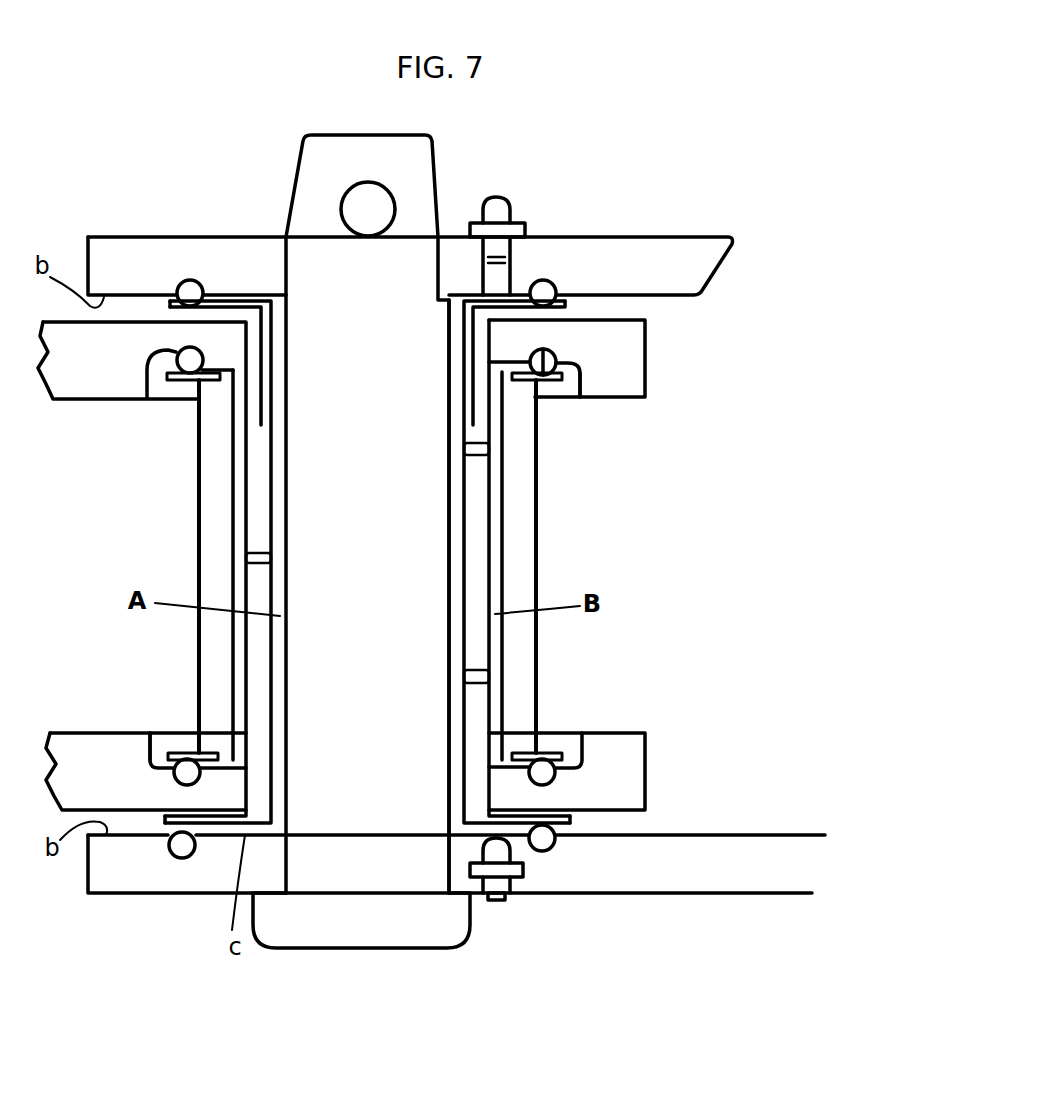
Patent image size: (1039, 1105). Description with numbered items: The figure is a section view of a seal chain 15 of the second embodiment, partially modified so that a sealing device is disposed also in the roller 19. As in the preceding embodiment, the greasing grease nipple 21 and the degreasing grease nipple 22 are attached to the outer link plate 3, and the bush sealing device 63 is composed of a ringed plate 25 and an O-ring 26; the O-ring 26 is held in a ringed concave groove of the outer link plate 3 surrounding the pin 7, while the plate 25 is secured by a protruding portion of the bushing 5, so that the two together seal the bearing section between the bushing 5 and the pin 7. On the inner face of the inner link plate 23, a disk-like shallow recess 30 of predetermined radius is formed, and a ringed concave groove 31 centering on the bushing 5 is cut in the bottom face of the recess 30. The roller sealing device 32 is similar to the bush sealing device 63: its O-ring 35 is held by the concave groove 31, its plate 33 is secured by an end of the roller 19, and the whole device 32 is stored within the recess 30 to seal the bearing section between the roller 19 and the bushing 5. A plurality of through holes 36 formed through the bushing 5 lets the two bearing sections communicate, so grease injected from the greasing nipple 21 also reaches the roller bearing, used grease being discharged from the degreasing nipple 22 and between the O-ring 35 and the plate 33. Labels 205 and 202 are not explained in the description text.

The seal chain 15 is at (195, 76).
The outer link plate 3 is at (130, 250).
The inner link plate 23 is at (625, 370).
The ringed plate 25 is at (230, 293).
The O-ring 26 is at (190, 292).
The greasing grease nipple 21 is at (499, 193).
The degreasing grease nipple 22 is at (497, 903).
The shaft body 205 is at (493, 283).
The shaft base 202 is at (477, 897).
The roller sealing device 32 is at (563, 348).
The recess 30 is at (572, 399).
The ringed concave groove 31 is at (545, 383).
The plate 33 is at (190, 382).
The O-ring 35 is at (172, 350).
The bush sealing device 63 is at (160, 305).
The through holes 36 is at (462, 447).
The bushing 5 is at (258, 497).
The roller 19 is at (520, 513).
The pin 7 is at (432, 575).